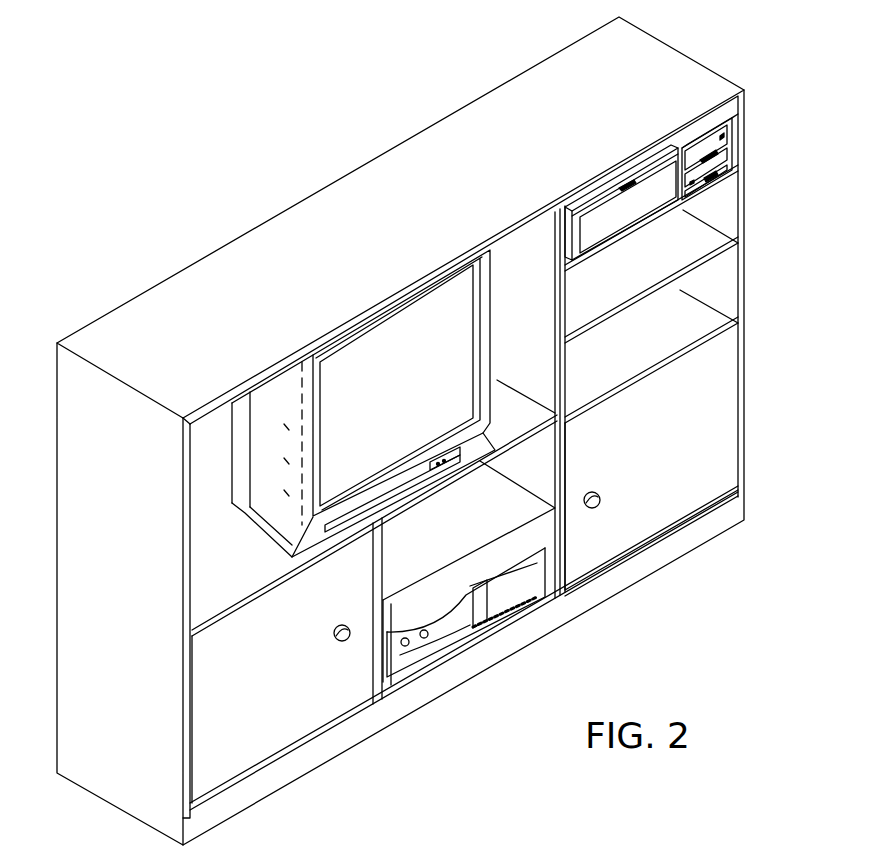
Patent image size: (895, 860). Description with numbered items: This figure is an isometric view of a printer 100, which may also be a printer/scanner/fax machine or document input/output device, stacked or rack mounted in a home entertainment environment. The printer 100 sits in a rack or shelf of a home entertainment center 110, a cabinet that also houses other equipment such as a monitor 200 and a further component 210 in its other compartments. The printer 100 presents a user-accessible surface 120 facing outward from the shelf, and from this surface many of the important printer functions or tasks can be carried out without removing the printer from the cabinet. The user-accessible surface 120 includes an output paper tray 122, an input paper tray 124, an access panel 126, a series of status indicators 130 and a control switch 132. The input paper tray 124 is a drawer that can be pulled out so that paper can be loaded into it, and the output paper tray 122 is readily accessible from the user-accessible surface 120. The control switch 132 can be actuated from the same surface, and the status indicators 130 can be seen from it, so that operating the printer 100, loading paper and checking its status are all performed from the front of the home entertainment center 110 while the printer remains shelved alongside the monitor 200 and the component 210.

The printer 100 is at (770, 81).
The home entertainment center 110 is at (240, 255).
The user-accessible surface 120 is at (578, 232).
The output paper tray 122 is at (723, 133).
The input paper tray 124 is at (694, 181).
The access panel 126 is at (656, 187).
The status indicators 130 is at (714, 156).
The control switch 132 is at (733, 146).
The monitor 200 is at (390, 350).
The audio component 210 is at (512, 598).